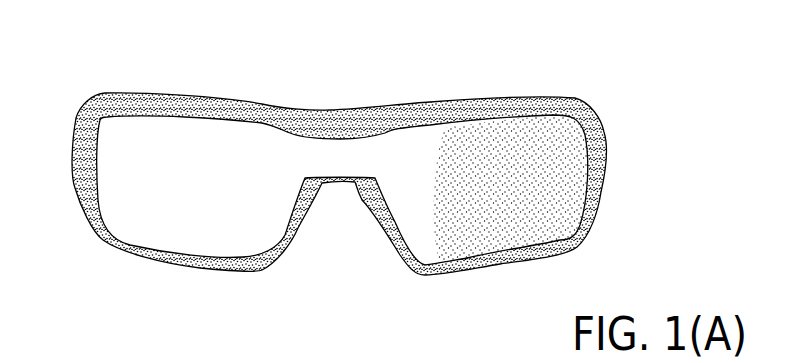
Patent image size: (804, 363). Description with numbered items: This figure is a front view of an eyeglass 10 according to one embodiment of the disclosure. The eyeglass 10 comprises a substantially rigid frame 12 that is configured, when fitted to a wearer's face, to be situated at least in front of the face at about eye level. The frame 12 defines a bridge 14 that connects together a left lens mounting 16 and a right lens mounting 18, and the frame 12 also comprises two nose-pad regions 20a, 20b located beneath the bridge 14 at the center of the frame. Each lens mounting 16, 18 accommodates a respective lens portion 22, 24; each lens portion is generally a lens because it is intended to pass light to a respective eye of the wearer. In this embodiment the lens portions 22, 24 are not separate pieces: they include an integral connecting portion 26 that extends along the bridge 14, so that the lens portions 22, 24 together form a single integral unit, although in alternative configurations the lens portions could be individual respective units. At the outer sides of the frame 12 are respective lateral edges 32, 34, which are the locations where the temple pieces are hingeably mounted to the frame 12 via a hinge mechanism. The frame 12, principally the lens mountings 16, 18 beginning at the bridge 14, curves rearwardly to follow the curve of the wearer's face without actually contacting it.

The eyeglass 10 is at (350, 174).
The frame 12 is at (597, 104).
The bridge 14 is at (348, 122).
The left lens mounting 16 is at (450, 273).
The right lens mounting 18 is at (210, 265).
The nose-pad region 20a is at (387, 223).
The nose-pad region 20b is at (303, 223).
The lens portion 22 is at (555, 207).
The lens portion 24 is at (130, 205).
The integral connecting portion 26 is at (350, 155).
The lateral edge 32 is at (597, 167).
The lateral edge 34 is at (85, 140).